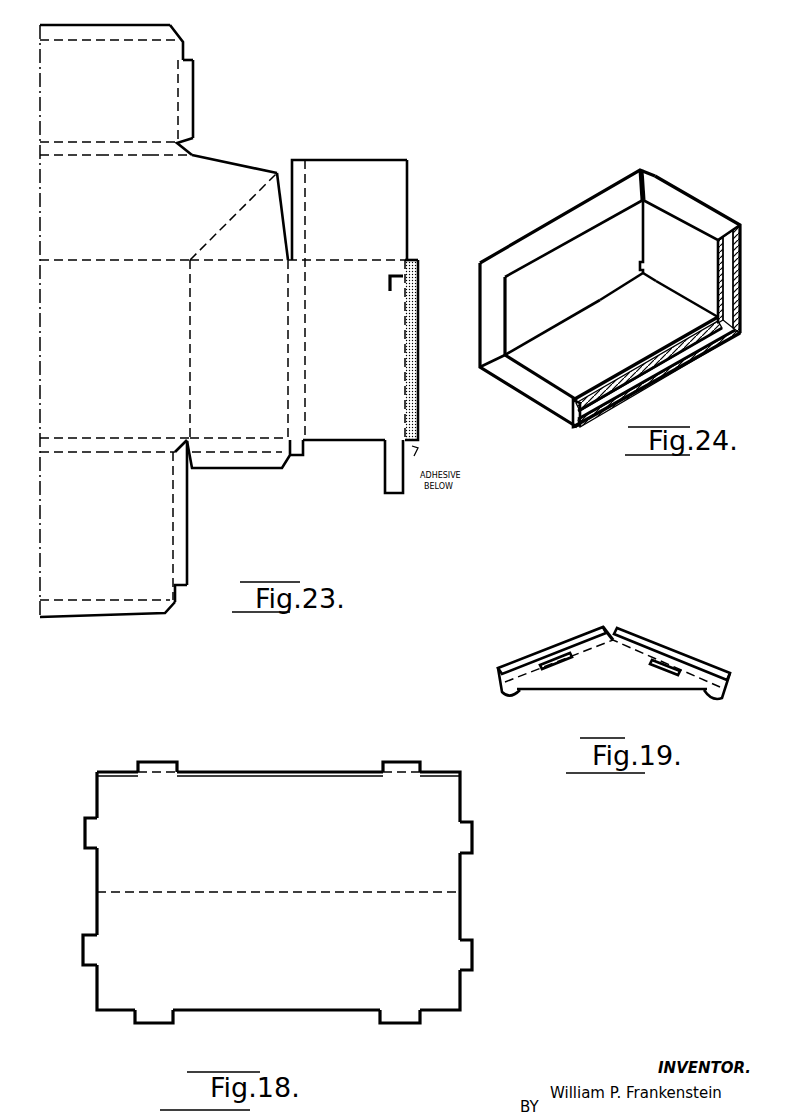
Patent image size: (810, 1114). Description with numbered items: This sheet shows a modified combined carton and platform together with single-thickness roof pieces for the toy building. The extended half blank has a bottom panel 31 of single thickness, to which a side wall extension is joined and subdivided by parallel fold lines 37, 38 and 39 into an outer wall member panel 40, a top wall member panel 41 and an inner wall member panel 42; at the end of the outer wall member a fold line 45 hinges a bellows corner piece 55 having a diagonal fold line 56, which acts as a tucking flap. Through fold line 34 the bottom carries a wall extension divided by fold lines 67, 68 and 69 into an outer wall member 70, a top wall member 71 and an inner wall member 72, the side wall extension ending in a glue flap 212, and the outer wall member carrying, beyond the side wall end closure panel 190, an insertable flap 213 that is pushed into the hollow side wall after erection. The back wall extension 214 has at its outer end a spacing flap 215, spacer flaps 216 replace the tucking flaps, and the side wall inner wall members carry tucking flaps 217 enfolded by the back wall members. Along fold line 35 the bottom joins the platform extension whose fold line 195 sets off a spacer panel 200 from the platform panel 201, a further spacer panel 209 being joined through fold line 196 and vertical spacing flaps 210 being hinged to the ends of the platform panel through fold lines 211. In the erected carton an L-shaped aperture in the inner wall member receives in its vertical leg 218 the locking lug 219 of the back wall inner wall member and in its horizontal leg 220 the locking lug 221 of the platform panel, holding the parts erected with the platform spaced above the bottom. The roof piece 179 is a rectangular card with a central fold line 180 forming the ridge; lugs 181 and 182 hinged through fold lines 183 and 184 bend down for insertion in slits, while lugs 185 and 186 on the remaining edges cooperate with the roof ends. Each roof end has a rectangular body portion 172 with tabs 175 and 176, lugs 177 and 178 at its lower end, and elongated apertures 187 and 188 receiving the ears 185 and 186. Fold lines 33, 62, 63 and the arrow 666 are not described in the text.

In FIG. 23, the bottom panel 31 is at (104, 343).
In FIG. 24, the bottom panel 31 is at (682, 367).
In FIG. 23, the fold line 33 is at (98, 262).
In FIG. 23, the score or fold line 34 is at (188, 332).
In FIG. 23, the score or fold line 35 is at (106, 440).
In FIG. 23, the score or fold line 37 is at (105, 148).
In FIG. 23, the score or fold line 38 is at (116, 141).
In FIG. 23, the score or fold line 39 is at (86, 50).
In FIG. 23, the outer wall member panel 40 is at (68, 253).
In FIG. 24, the outer wall member panel 40 is at (741, 278).
In FIG. 23, the top wall member panel 41 is at (53, 147).
In FIG. 24, the top wall member panel 41 is at (715, 222).
In FIG. 23, the inner wall member panel 42 is at (152, 148).
In FIG. 24, the inner wall member panel 42 is at (740, 256).
In FIG. 23, the score or fold line 45 is at (185, 231).
In FIG. 23, the corner piece 55 is at (234, 154).
In FIG. 23, the score or fold line 56 is at (236, 210).
In FIG. 23, the fold line 62 is at (306, 208).
In FIG. 23, the side flap 63 is at (306, 173).
In FIG. 23, the score or fold line 67 is at (288, 380).
In FIG. 23, the score or fold line 68 is at (306, 387).
In FIG. 23, the score or fold line 69 is at (405, 393).
In FIG. 23, the outer wall member 70 is at (200, 378).
In FIG. 23, the top wall member 71 is at (306, 353).
In FIG. 24, the top wall member 71 is at (552, 228).
In FIG. 23, the inner wall member 72 is at (345, 440).
In FIG. 24, the inner wall member 72 is at (535, 330).
In FIG. 19, the body portion 172 is at (611, 680).
In FIG. 19, the tab 175 is at (720, 670).
In FIG. 19, the tab 176 is at (516, 656).
In FIG. 19, the lug 177 is at (716, 700).
In FIG. 19, the lug 178 is at (512, 698).
In FIG. 18, the roof piece 179 is at (306, 843).
In FIG. 18, the score or fold line 180 is at (248, 892).
In FIG. 18, the lug 181 is at (176, 764).
In FIG. 18, the lug 182 is at (418, 764).
In FIG. 18, the score or fold line 183 is at (158, 778).
In FIG. 18, the score or fold line 184 is at (393, 778).
In FIG. 18, the lug 185 is at (473, 850).
In FIG. 18, the lug 186 is at (84, 842).
In FIG. 19, the elongated aperture 187 is at (548, 670).
In FIG. 19, the elongated aperture 188 is at (656, 676).
In FIG. 23, the side wall end closure panel 190 is at (280, 424).
In FIG. 24, the side wall end closure panel 190 is at (486, 322).
In FIG. 23, the score or fold line 195 is at (82, 455).
In FIG. 23, the score or fold line 196 is at (126, 602).
In FIG. 23, the spacer panel 200 is at (164, 424).
In FIG. 24, the spacer panel 200 is at (573, 425).
In FIG. 23, the platform panel 201 is at (72, 424).
In FIG. 24, the platform panel 201 is at (628, 351).
In FIG. 23, the spacer panel 209 is at (66, 613).
In FIG. 24, the spacer panel 209 is at (720, 340).
In FIG. 23, the vertical spacing panel or flap 210 is at (188, 535).
In FIG. 23, the score or fold line 211 is at (172, 536).
In FIG. 23, the glue flap 212 is at (415, 402).
In FIG. 23, the insertable flap 213 is at (230, 470).
In FIG. 23, the back wall extension 214 is at (258, 98).
In FIG. 23, the spacing panel or flap 215 is at (180, 30).
In FIG. 24, the spacing panel or flap 215 is at (741, 316).
In FIG. 23, the spacer flap 216 is at (190, 81).
In FIG. 23, the tucking flap 217 is at (405, 181).
In FIG. 23, the vertical leg 218 is at (398, 272).
In FIG. 24, the vertical leg 218 is at (638, 265).
In FIG. 23, the locking lug 219 is at (187, 56).
In FIG. 24, the locking lug 219 is at (650, 267).
In FIG. 23, the horizontal leg 220 is at (388, 283).
In FIG. 24, the horizontal leg 220 is at (636, 280).
In FIG. 23, the locking lug 221 is at (178, 592).
In FIG. 24, the locking lug 221 is at (638, 284).
In FIG. 23, the blank 666 is at (320, 499).